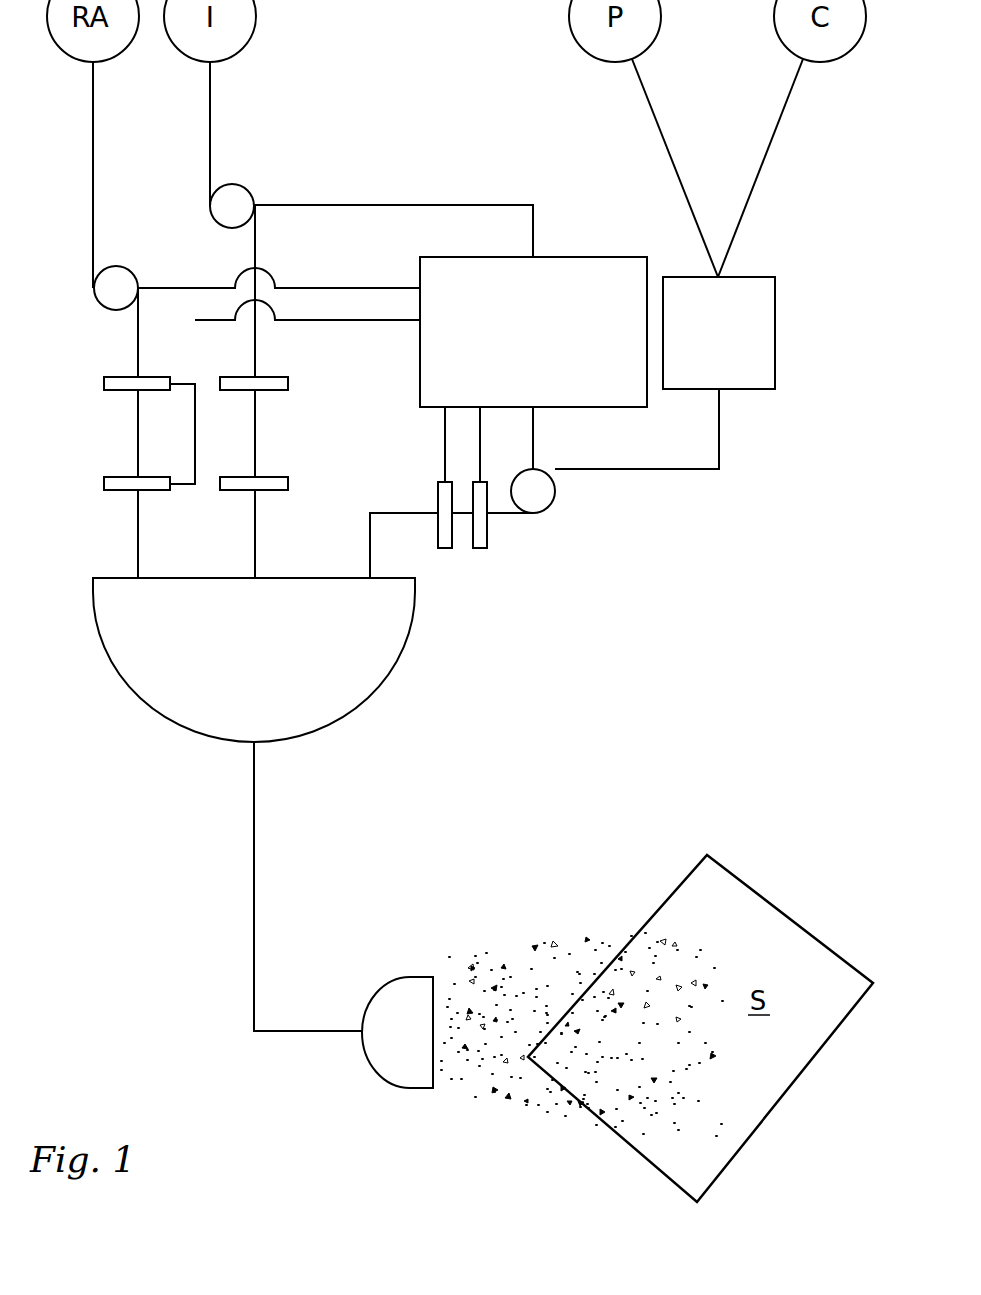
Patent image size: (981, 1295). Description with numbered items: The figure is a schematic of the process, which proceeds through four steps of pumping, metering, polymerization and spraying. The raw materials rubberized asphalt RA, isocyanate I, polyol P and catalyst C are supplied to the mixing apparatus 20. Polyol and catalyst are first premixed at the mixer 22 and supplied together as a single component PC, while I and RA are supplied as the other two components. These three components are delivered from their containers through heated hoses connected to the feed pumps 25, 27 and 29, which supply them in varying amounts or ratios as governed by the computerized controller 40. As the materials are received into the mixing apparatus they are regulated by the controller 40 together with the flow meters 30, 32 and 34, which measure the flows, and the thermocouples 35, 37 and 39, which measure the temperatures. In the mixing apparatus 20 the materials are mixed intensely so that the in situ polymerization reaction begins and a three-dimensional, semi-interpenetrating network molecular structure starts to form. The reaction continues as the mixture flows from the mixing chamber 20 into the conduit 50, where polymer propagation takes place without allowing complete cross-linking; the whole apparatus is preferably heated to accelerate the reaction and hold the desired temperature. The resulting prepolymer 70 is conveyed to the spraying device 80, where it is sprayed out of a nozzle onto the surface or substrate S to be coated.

The mixing apparatus 20 is at (410, 628).
The mixer 22 is at (777, 328).
The feed pump 25 is at (93, 290).
The feed pump 27 is at (218, 225).
The feed pump 29 is at (555, 500).
The flow meter 30 is at (117, 392).
The flow meter 32 is at (288, 384).
The flow meter 34 is at (487, 538).
The thermocouple 35 is at (115, 492).
The thermocouple 37 is at (280, 477).
The thermocouple 39 is at (437, 493).
The controller 40 is at (519, 350).
The conduit 50 is at (254, 825).
The prepolymer 70 is at (580, 937).
The spraying device 80 is at (365, 1048).